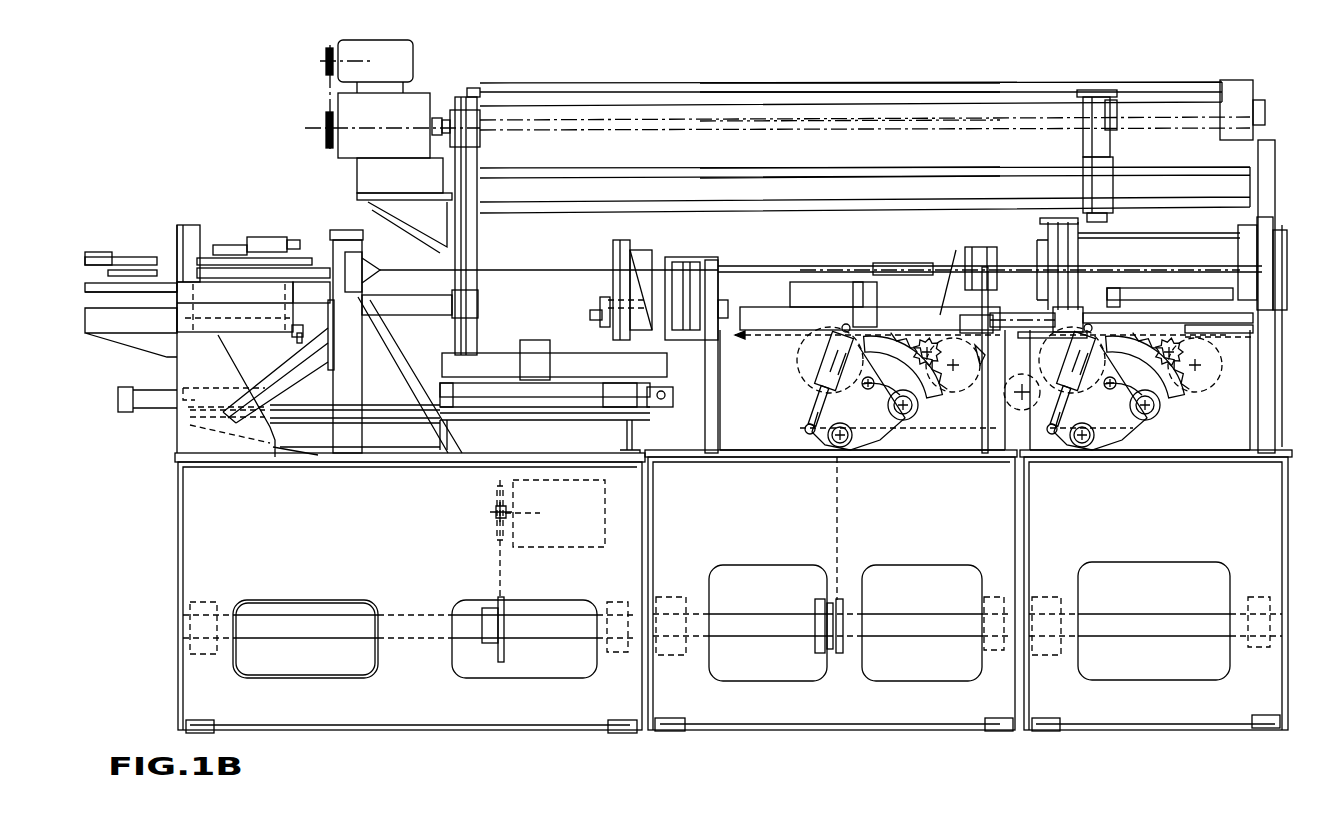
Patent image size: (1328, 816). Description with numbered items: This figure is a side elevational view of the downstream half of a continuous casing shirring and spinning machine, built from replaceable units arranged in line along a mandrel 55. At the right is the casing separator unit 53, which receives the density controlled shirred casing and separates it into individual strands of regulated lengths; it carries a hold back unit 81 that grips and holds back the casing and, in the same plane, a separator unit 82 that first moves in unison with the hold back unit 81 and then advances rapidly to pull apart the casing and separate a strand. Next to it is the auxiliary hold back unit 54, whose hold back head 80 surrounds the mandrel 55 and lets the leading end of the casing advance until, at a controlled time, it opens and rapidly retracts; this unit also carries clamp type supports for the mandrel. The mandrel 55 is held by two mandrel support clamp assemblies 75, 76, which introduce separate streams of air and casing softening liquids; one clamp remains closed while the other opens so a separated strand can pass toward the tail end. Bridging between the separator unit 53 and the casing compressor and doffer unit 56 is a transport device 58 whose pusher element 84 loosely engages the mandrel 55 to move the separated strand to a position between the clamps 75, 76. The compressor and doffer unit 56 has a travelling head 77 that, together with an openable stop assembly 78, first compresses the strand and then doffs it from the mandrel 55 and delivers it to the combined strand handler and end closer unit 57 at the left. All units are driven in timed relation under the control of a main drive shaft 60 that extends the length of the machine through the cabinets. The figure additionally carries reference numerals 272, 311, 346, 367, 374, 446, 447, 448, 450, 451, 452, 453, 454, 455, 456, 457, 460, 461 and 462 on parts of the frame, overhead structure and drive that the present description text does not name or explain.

The casing separator unit 53 is at (1140, 735).
The auxiliary hold back unit 54 is at (857, 737).
The mandrel 55 is at (790, 272).
The casing compressor and doffer unit 56 is at (500, 738).
The combined strand handler and end closer unit 57 is at (215, 225).
The transport device 58 is at (920, 77).
The main drive shaft 60 is at (292, 650).
The mandrel support clamp assembly 75 is at (980, 248).
The mandrel support clamp assembly 76 is at (688, 262).
The travelling head 77 is at (600, 254).
The openable stop assembly 78 is at (370, 255).
The hold back head 80 is at (903, 263).
The hold back unit 81 is at (1240, 252).
The separator unit 82 is at (1085, 268).
The pusher element 84 is at (1097, 224).
The base panel 272 is at (1110, 718).
The base panel 311 is at (770, 723).
The frame 346 is at (767, 320).
The cylinder 367 is at (830, 372).
The base panel 374 is at (366, 722).
The beam rail 446 is at (805, 100).
The shaft 447 is at (790, 130).
The lower rail 448 is at (880, 197).
The support post 450 is at (477, 163).
The bearing block 451 is at (1265, 123).
The gear box 452 is at (413, 105).
The motor 453 is at (408, 62).
The carriage 454 is at (1117, 153).
The slide 455 is at (1110, 107).
The bracket 456 is at (1083, 135).
The housing 457 is at (548, 540).
The gear 460 is at (495, 493).
The gear plate 461 is at (505, 658).
The drive 462 is at (500, 552).